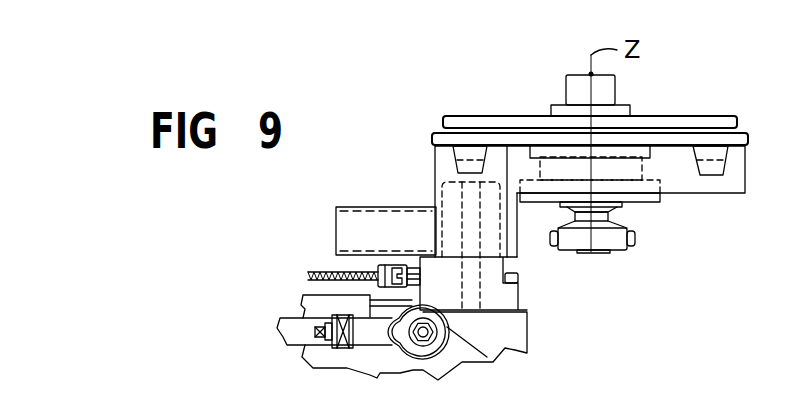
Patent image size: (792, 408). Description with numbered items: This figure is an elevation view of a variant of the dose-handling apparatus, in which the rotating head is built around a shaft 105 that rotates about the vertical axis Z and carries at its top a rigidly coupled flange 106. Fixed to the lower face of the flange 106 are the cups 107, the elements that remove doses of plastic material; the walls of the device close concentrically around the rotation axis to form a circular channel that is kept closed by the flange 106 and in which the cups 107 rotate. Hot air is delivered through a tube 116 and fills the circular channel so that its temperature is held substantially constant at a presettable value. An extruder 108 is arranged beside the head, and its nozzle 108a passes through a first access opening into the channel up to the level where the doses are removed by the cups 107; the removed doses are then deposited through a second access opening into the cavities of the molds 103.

The mold 103 is at (672, 398).
The shaft 105 is at (598, 254).
The flange 106 is at (430, 138).
The cup 107 is at (712, 178).
The extruder 108 is at (508, 325).
The nozzle 108a is at (449, 200).
The tube 116 is at (353, 232).